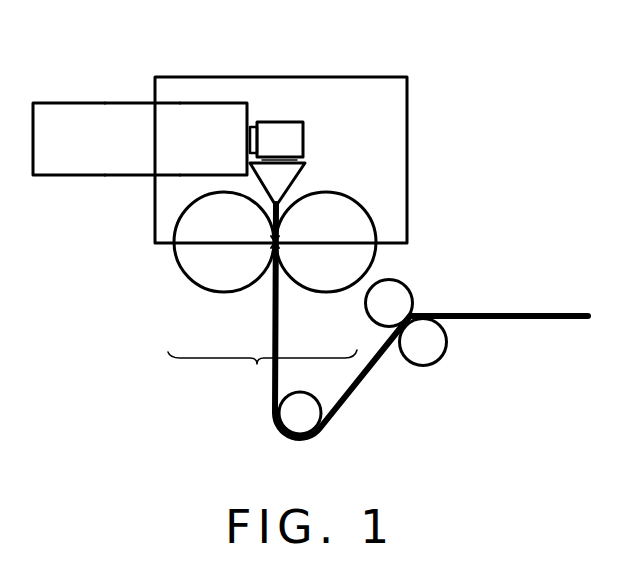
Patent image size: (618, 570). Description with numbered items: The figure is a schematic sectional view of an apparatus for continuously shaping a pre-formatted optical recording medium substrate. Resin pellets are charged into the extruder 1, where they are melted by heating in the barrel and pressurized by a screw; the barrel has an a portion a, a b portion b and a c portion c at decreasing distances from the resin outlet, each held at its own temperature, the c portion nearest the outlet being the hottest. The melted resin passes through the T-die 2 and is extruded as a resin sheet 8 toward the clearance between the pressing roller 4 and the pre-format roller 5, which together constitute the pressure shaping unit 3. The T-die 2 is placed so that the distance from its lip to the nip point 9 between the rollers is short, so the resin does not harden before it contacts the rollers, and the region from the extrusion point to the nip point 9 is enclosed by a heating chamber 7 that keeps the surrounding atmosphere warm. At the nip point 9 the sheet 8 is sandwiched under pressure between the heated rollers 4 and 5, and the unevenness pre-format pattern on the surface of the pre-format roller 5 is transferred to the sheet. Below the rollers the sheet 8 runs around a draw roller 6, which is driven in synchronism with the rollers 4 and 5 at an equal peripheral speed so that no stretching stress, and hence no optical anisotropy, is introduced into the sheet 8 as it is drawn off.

The extruder 1 is at (132, 163).
The a portion of extruder barrel a is at (50, 155).
The b portion of extruder barrel b is at (135, 157).
The c portion of extruder barrel c is at (207, 160).
The T-die 2 is at (285, 180).
The pressure shaping unit 3 is at (257, 364).
The pressing roller 4 is at (355, 258).
The pre-format roller 5 is at (213, 278).
The draw roller 6 is at (380, 315).
The heating chamber 7 is at (325, 92).
The resin sheet 8 is at (522, 312).
The nip point 9 is at (278, 241).